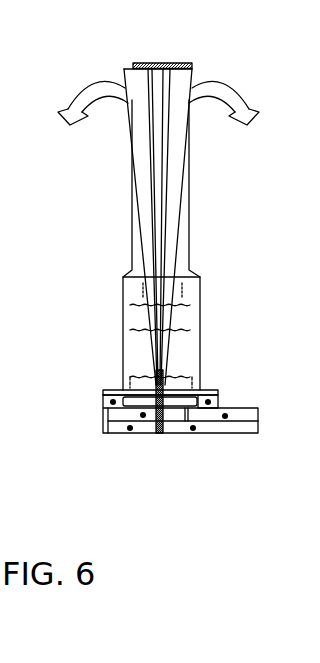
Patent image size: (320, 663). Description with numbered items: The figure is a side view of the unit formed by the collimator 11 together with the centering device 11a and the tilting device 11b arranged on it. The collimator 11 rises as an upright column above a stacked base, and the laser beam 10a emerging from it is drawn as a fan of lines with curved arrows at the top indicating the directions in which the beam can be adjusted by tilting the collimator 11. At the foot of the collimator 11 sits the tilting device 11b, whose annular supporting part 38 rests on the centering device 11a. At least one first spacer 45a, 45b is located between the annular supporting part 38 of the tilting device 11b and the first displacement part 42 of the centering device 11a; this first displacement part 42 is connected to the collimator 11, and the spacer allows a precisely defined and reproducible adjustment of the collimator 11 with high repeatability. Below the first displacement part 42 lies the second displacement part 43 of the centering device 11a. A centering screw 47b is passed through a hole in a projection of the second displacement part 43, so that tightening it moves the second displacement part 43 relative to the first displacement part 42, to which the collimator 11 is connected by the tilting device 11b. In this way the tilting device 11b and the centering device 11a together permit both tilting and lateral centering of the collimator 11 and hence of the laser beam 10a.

The laser beam 10a is at (147, 171).
The collimator 11 is at (182, 267).
The centering device 11a is at (130, 428).
The tilting device 11b is at (110, 391).
The annular supporting part 38 is at (208, 388).
The first displacement part 42 is at (143, 416).
The second displacement part 43 is at (193, 428).
The first spacer 45a is at (113, 402).
The first spacer 45b is at (208, 403).
The centering screw 47b is at (225, 416).